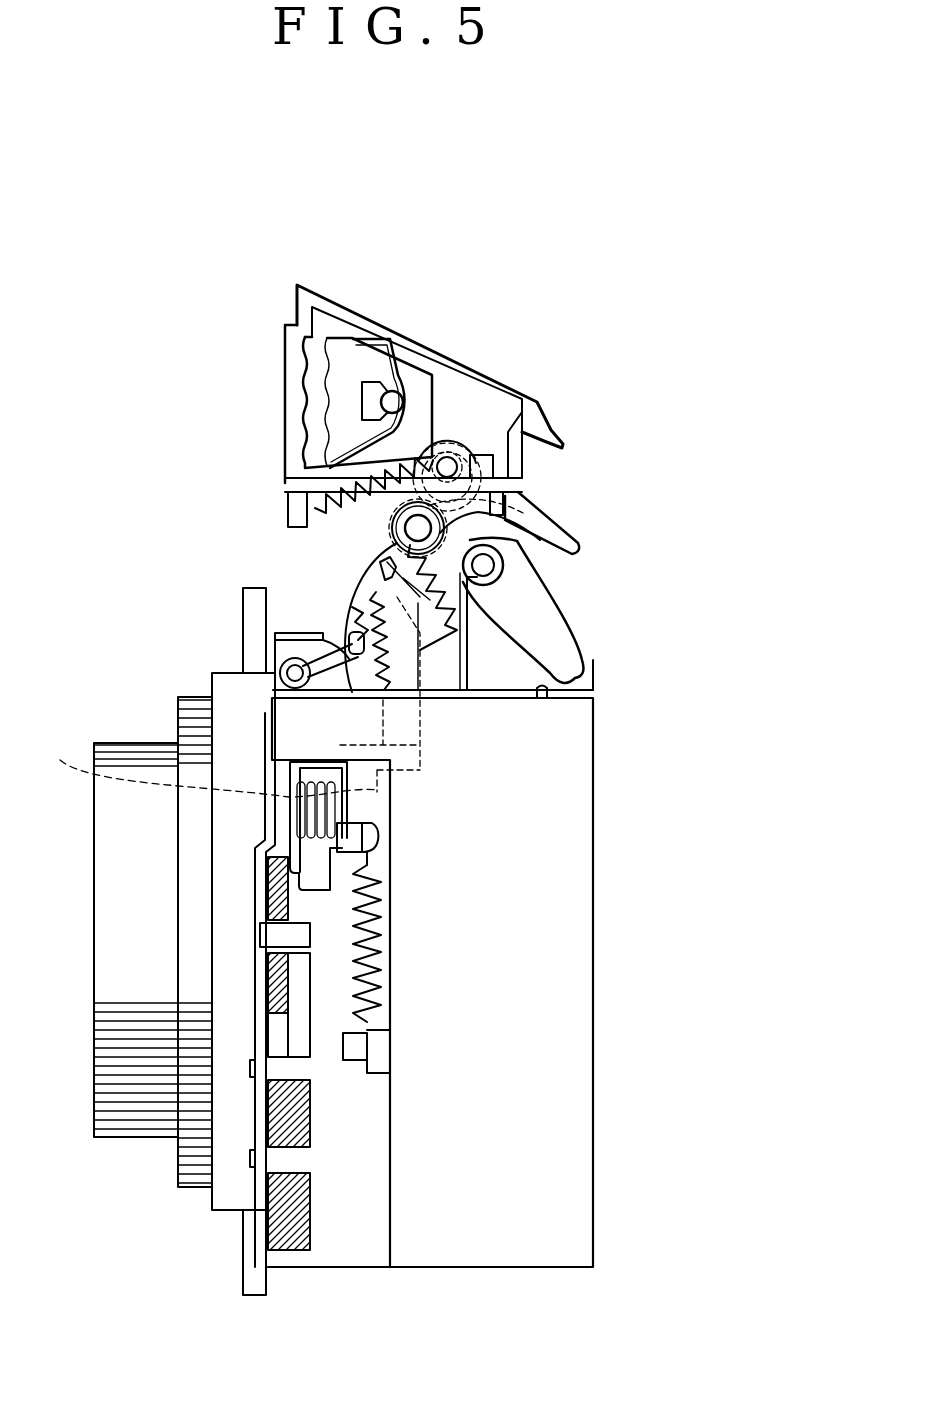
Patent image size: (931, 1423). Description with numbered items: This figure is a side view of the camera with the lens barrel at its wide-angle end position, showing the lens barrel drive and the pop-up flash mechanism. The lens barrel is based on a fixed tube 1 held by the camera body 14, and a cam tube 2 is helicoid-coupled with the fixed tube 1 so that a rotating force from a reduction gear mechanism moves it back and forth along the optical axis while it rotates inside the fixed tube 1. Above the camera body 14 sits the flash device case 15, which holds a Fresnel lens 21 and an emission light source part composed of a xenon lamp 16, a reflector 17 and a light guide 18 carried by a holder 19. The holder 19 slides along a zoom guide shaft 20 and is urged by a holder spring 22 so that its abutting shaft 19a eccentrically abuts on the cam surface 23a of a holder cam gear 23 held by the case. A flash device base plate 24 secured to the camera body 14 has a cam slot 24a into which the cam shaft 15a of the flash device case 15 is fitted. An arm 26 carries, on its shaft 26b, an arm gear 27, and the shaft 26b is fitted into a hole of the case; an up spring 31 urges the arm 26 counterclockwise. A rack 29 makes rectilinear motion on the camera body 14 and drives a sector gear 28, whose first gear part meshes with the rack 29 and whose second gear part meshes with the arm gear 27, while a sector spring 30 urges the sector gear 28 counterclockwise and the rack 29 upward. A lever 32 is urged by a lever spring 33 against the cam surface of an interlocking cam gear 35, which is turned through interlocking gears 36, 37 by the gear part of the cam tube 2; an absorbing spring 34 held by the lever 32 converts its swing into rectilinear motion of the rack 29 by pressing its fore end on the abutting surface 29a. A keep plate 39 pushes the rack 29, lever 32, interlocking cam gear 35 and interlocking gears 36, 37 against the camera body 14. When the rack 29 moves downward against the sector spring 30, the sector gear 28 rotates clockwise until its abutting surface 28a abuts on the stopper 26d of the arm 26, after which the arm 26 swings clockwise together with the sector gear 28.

The fixed tube 1 is at (227, 1200).
The cam tube 2 is at (190, 1173).
The camera body 14 is at (547, 1207).
The flash device case 15 is at (510, 377).
The cam shaft 15a is at (527, 593).
The xenon lamp 16 is at (393, 403).
The reflector 17 is at (387, 363).
The light guide 18 is at (337, 355).
The holder 19 is at (420, 388).
The abutting shaft 19a is at (507, 470).
The zoom guide shaft 20 is at (308, 505).
The Fresnel lens 21 is at (293, 342).
The holder spring 22 is at (378, 477).
The holder cam gear 23 is at (440, 537).
The cam surface 23a is at (478, 521).
The flash device base plate 24 is at (518, 665).
The cam slot 24a is at (540, 633).
The arm 26 is at (352, 648).
The shaft 26b is at (395, 520).
The stopper 26d is at (405, 545).
The arm gear 27 is at (500, 562).
The sector gear 28 is at (360, 574).
The abutting surface 28a is at (385, 570).
The rack 29 is at (405, 683).
The abutting surface 29a is at (196, 766).
The sector spring 30 is at (322, 665).
The up spring 31 is at (318, 630).
The lever 32 is at (310, 893).
The lever spring 33 is at (387, 983).
The absorbing spring 34 is at (300, 815).
The interlocking cam gear 35 is at (313, 858).
The interlocking gear 36 is at (275, 1037).
The interlocking gear 37 is at (270, 1137).
The keep plate 39 is at (265, 1237).